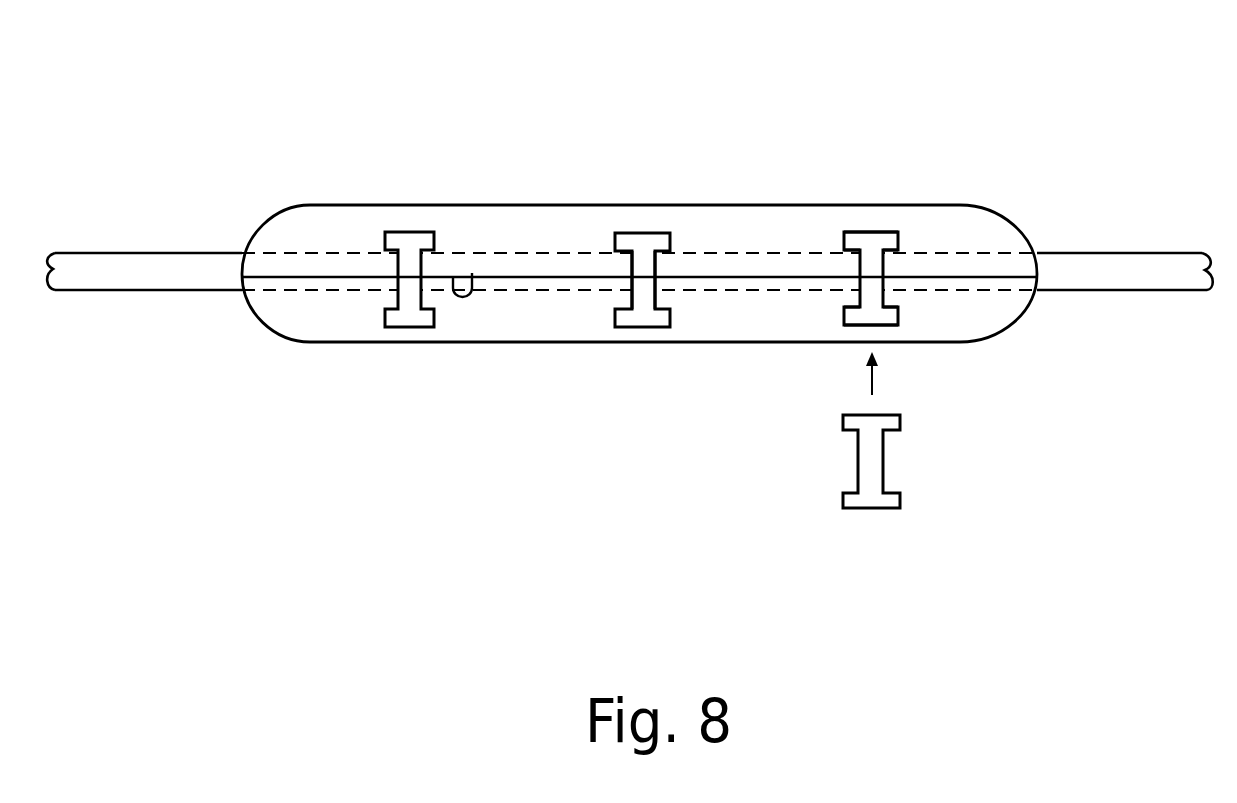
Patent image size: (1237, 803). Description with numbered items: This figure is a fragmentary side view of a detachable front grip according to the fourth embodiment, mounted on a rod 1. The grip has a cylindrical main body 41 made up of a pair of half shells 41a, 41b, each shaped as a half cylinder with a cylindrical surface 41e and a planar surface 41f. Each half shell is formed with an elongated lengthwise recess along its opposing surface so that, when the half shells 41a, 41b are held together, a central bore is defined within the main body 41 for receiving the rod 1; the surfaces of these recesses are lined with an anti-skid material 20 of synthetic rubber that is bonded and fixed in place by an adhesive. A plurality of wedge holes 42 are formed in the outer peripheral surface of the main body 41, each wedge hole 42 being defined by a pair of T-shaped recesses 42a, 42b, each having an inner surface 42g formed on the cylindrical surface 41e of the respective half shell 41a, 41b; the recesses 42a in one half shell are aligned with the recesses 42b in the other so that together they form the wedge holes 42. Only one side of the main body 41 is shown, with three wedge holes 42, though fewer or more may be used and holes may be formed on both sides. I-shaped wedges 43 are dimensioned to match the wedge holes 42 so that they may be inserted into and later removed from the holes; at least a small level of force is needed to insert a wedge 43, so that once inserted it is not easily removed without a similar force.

The rod 1 is at (1130, 270).
The anti-skid material 20 is at (585, 290).
The main body 41 is at (639, 256).
The half shell 41a is at (525, 315).
The half shell 41b is at (532, 230).
The cylindrical surface 41e is at (488, 223).
The planar surface 41f is at (472, 273).
The wedge hole 42 is at (838, 310).
The T-shaped recess 42a is at (888, 318).
The T-shaped recess 42b is at (872, 240).
The inner surface 42g is at (640, 247).
The wedge 43 is at (873, 463).